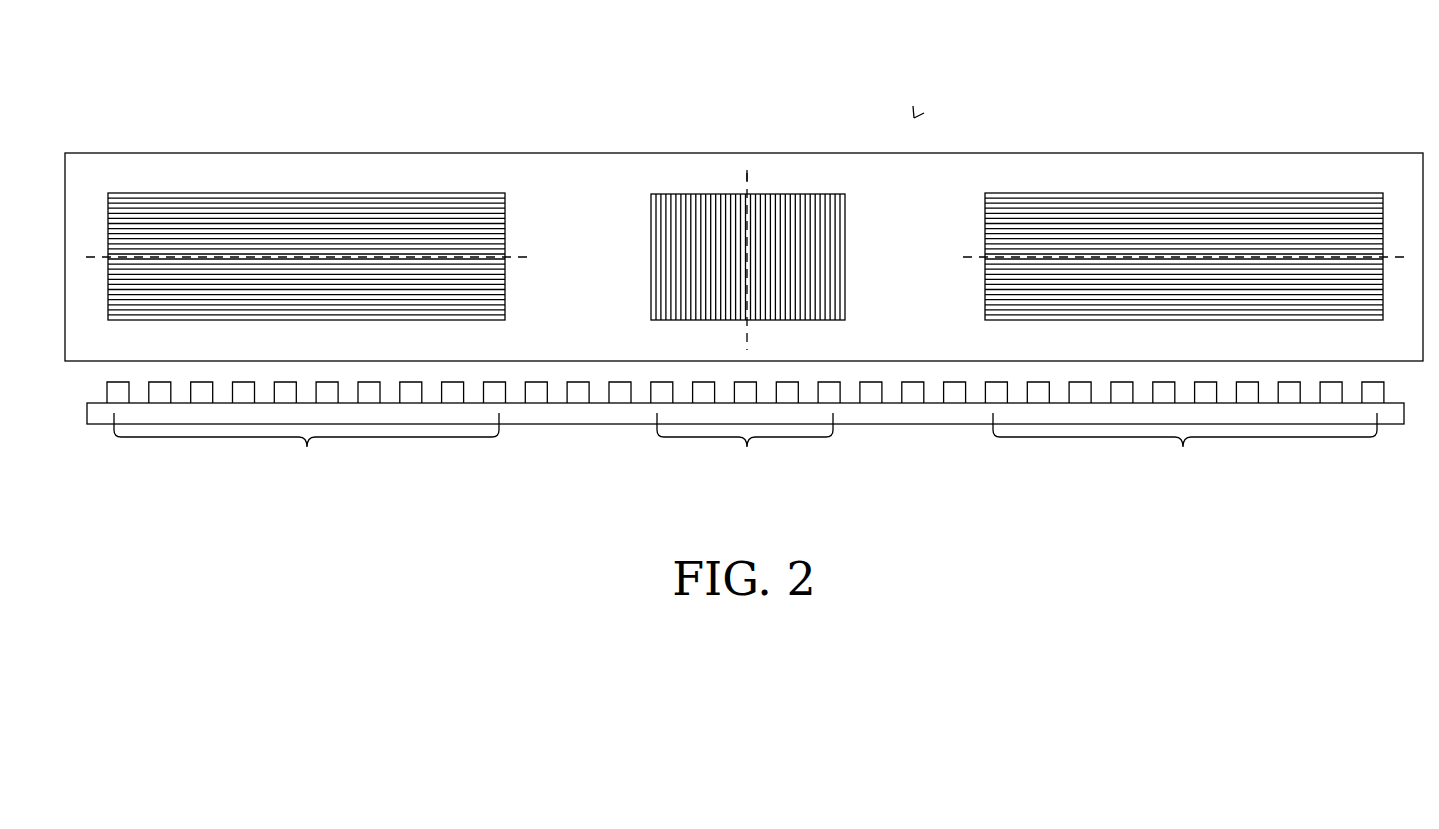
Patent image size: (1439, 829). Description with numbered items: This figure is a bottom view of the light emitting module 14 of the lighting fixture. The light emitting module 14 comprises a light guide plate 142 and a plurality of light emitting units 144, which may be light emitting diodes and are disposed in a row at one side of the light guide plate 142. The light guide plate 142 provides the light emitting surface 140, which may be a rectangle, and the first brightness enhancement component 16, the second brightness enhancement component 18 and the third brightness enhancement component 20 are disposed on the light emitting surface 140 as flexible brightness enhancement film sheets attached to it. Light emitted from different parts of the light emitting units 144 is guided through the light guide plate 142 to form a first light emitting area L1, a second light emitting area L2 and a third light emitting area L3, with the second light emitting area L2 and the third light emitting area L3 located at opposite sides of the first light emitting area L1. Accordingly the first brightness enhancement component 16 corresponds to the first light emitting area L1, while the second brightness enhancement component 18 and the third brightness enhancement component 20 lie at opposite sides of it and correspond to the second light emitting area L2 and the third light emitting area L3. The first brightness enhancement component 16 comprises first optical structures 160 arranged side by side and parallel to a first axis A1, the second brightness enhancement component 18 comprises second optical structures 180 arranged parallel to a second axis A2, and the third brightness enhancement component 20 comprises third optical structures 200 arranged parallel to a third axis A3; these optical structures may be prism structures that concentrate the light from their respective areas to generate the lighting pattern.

The light emitting module 14 is at (914, 118).
The light emitting surface 140 is at (861, 180).
The light guide plate 142 is at (1093, 153).
The light emitting units 144 is at (1377, 390).
The first brightness enhancement component 16 is at (697, 193).
The first optical structures 160 is at (675, 217).
The second brightness enhancement component 18 is at (404, 193).
The second optical structures 180 is at (292, 213).
The third brightness enhancement component 20 is at (1233, 193).
The third optical structures 200 is at (1325, 215).
The first axis A1 is at (747, 175).
The second axis A2 is at (527, 257).
The third axis A3 is at (963, 257).
The first light emitting area L1 is at (745, 446).
The second light emitting area L2 is at (306, 446).
The third light emitting area L3 is at (1185, 446).